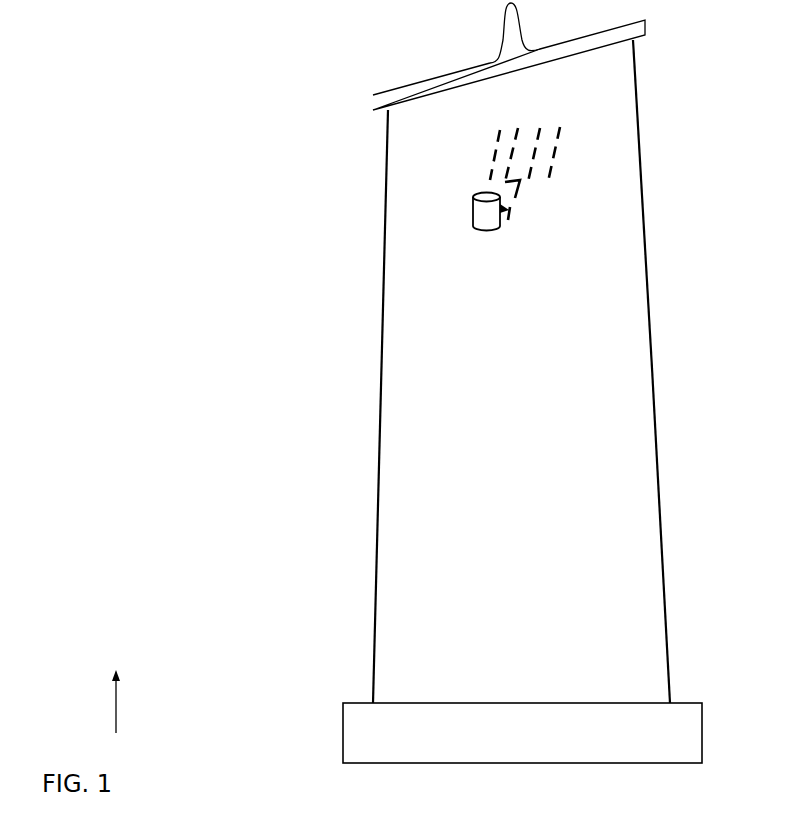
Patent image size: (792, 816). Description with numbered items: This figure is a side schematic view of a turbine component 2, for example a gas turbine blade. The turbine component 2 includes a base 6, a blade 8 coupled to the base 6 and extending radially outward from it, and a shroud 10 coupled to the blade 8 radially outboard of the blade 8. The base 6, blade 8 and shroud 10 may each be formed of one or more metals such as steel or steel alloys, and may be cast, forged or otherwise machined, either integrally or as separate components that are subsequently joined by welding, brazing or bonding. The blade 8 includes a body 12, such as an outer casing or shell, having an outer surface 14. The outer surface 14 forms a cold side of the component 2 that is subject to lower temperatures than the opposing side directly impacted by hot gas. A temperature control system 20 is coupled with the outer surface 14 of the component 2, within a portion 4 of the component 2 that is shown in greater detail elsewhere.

The turbine component 2 is at (180, 84).
The portion 4 is at (675, 173).
The base 6 is at (529, 745).
The blade 8 is at (504, 284).
The shroud 10 is at (382, 97).
The body 12 is at (600, 486).
The outer surface 14 is at (625, 358).
The temperature control system 20 is at (425, 176).